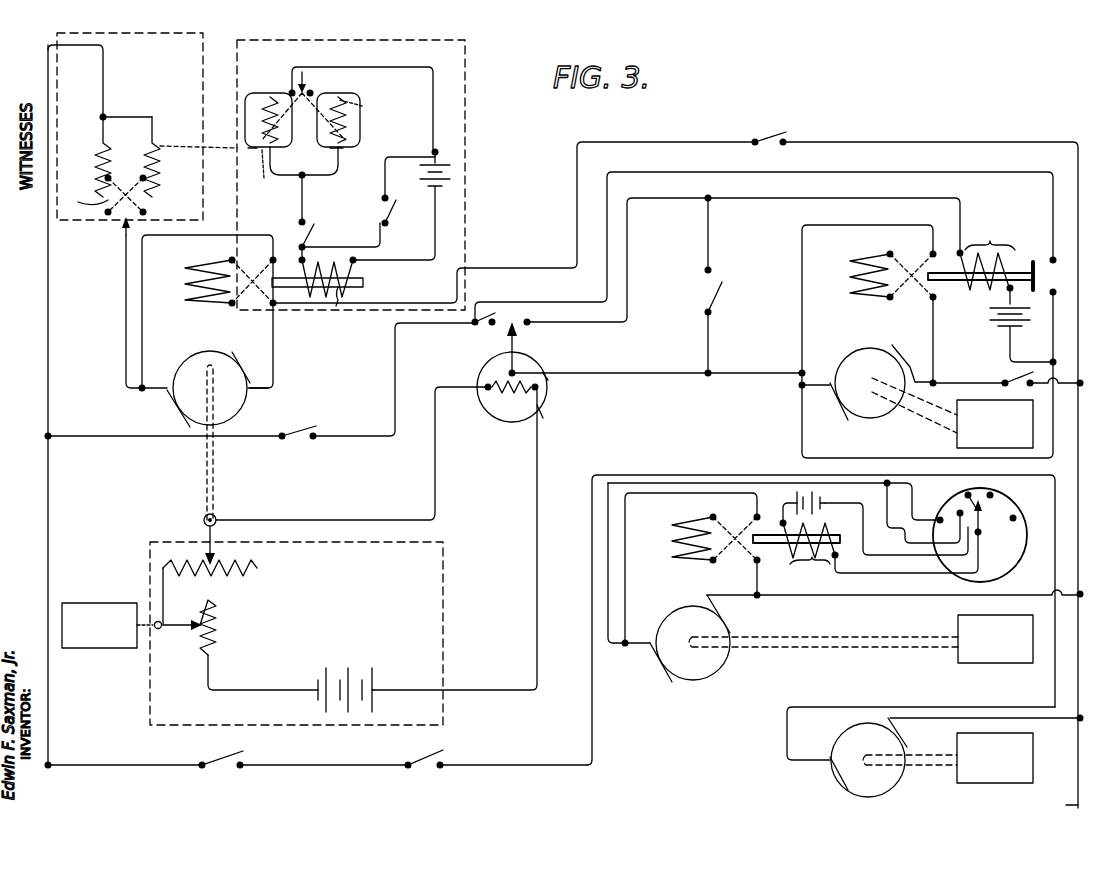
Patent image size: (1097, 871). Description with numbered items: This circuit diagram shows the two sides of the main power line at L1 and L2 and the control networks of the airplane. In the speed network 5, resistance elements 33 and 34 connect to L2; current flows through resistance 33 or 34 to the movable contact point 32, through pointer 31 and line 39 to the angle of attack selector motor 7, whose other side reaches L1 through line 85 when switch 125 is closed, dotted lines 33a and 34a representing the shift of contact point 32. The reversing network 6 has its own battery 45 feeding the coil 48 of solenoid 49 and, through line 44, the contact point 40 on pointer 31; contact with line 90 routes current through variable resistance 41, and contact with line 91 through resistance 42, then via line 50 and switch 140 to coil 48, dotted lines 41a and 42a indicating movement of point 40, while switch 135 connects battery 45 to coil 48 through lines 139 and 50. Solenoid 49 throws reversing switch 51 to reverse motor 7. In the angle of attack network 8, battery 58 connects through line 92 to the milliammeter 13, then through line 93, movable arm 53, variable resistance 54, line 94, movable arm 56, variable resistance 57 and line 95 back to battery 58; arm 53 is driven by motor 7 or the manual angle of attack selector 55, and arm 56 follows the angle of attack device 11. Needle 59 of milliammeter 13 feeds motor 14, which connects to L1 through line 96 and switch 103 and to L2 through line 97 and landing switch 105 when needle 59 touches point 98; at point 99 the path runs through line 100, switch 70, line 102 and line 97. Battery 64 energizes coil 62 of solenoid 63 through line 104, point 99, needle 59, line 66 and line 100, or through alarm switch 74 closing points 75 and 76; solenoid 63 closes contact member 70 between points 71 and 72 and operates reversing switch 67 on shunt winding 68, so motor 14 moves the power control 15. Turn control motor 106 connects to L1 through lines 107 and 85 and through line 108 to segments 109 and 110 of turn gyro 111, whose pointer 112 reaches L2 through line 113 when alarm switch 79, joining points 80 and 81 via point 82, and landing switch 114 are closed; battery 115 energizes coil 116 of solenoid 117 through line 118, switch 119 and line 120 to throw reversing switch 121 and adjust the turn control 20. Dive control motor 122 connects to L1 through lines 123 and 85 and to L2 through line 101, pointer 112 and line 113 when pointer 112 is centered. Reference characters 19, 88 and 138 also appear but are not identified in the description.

The speed network 5 is at (203, 47).
The reversing network 6 is at (467, 62).
The angle of attack selector motor 7 is at (210, 352).
The angle of attack network 8 is at (443, 607).
The angle of attack device 11 is at (100, 648).
The milliammeter 13 is at (548, 387).
The reversible motor 14 is at (857, 346).
The power control 15 is at (955, 433).
The dive control 19 is at (990, 783).
The turn control 20 is at (995, 663).
The pointer 31 is at (124, 226).
The movable contact point 32 is at (83, 200).
The resistance element 33 is at (100, 121).
The dotted line 33a is at (128, 185).
The resistance element 34 is at (164, 159).
The dotted line 34a is at (198, 148).
The line 39 is at (126, 312).
The contact point 40 is at (303, 103).
The variable resistance 41 is at (275, 130).
The dotted line 41a is at (261, 173).
The resistance 42 is at (352, 128).
The dotted line 42a is at (368, 107).
The line 44 is at (392, 66).
The battery 45 is at (452, 172).
The coil 48 is at (329, 311).
The solenoid 49 is at (366, 282).
The line 50 is at (303, 190).
The reversing switch 51 is at (246, 259).
The movable arm 53 is at (207, 554).
The variable resistance 54 is at (257, 568).
The manual angle of attack selector 55 is at (204, 516).
The movable arm 56 is at (194, 632).
The variable resistance 57 is at (216, 623).
The battery 58 is at (346, 667).
The needle 59 is at (515, 340).
The coil 62 is at (990, 284).
The solenoid 63 is at (986, 257).
The battery 64 is at (994, 318).
The line 66 is at (657, 385).
The reversing switch 67 is at (912, 299).
The shunt winding 68 is at (848, 294).
The contact member 70 is at (1035, 262).
The point 71 is at (1056, 258).
The point 72 is at (1056, 294).
The alarm switch 74 is at (722, 291).
The contact point 75 is at (706, 370).
The contact point 76 is at (705, 202).
The alarm switch 79 is at (224, 755).
The point 80 is at (187, 781).
The point 81 is at (245, 782).
The point 82 is at (308, 767).
The line 85 is at (274, 363).
The conductor 88 is at (465, 228).
The line 90 is at (286, 92).
The line 91 is at (325, 92).
The line 92 is at (538, 497).
The line 93 is at (434, 458).
The line 94 is at (168, 597).
The line 95 is at (283, 692).
The line 96 is at (958, 382).
The line 97 is at (396, 372).
The point 98 is at (479, 330).
The point 99 is at (527, 319).
The line 100 is at (800, 414).
The line 101 is at (915, 706).
The line 102 is at (868, 171).
The switch 103 is at (1018, 380).
The line 104 is at (830, 197).
The landing switch 105 is at (302, 431).
The turn control motor 106 is at (700, 682).
The line 107 is at (868, 596).
The line 108 is at (666, 474).
The segment 109 is at (993, 497).
The segment 110 is at (956, 508).
The turn gyro 111 is at (1006, 570).
The pointer 112 is at (990, 512).
The line 113 is at (520, 767).
The landing switch 114 is at (432, 768).
The battery 115 is at (824, 501).
The coil 116 is at (832, 530).
The solenoid 117 is at (809, 543).
The line 118 is at (864, 540).
The switch 119 is at (996, 531).
The line 120 is at (906, 552).
The reversing switch 121 is at (693, 568).
The dive control motor 122 is at (884, 792).
The line 123 is at (925, 727).
The switch 125 is at (770, 137).
The switch 135 is at (395, 212).
The contact 138 is at (390, 197).
The line 139 is at (410, 156).
The switch 140 is at (312, 234).
The main power line side L1 is at (1058, 806).
The main power line side L2 is at (48, 790).